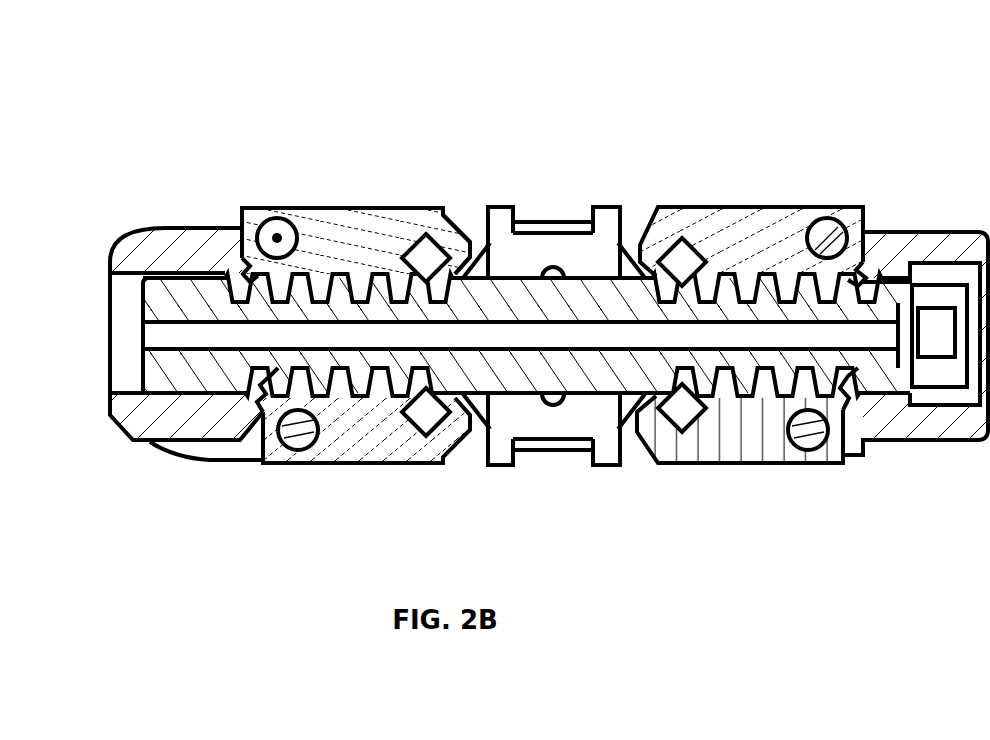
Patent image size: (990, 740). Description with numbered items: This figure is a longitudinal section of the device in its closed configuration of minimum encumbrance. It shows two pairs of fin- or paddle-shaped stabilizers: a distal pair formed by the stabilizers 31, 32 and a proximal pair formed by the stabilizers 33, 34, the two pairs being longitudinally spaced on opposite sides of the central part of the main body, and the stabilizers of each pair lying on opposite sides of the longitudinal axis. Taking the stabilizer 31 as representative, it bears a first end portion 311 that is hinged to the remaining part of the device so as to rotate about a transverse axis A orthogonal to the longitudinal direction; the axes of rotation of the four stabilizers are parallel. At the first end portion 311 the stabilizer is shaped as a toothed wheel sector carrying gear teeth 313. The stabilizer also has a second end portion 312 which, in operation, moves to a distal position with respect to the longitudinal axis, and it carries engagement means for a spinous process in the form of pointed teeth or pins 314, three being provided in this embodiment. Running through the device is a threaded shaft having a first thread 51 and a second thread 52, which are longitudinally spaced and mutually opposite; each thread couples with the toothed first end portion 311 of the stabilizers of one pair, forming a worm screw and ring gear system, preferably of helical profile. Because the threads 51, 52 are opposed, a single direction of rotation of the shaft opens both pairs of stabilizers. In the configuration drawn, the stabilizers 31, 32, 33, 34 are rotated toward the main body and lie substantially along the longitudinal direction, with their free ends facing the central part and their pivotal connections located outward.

The stabilizer 31 is at (373, 206).
The stabilizer 32 is at (413, 452).
The stabilizer 33 is at (767, 220).
The stabilizer 34 is at (772, 452).
The first end portion 311 is at (253, 214).
The second end portion 312 is at (418, 217).
The gear teeth 313 is at (243, 260).
The teeth or pins 314 is at (457, 225).
The transverse axis A is at (279, 235).
The first thread 51 is at (278, 367).
The second thread 52 is at (823, 370).